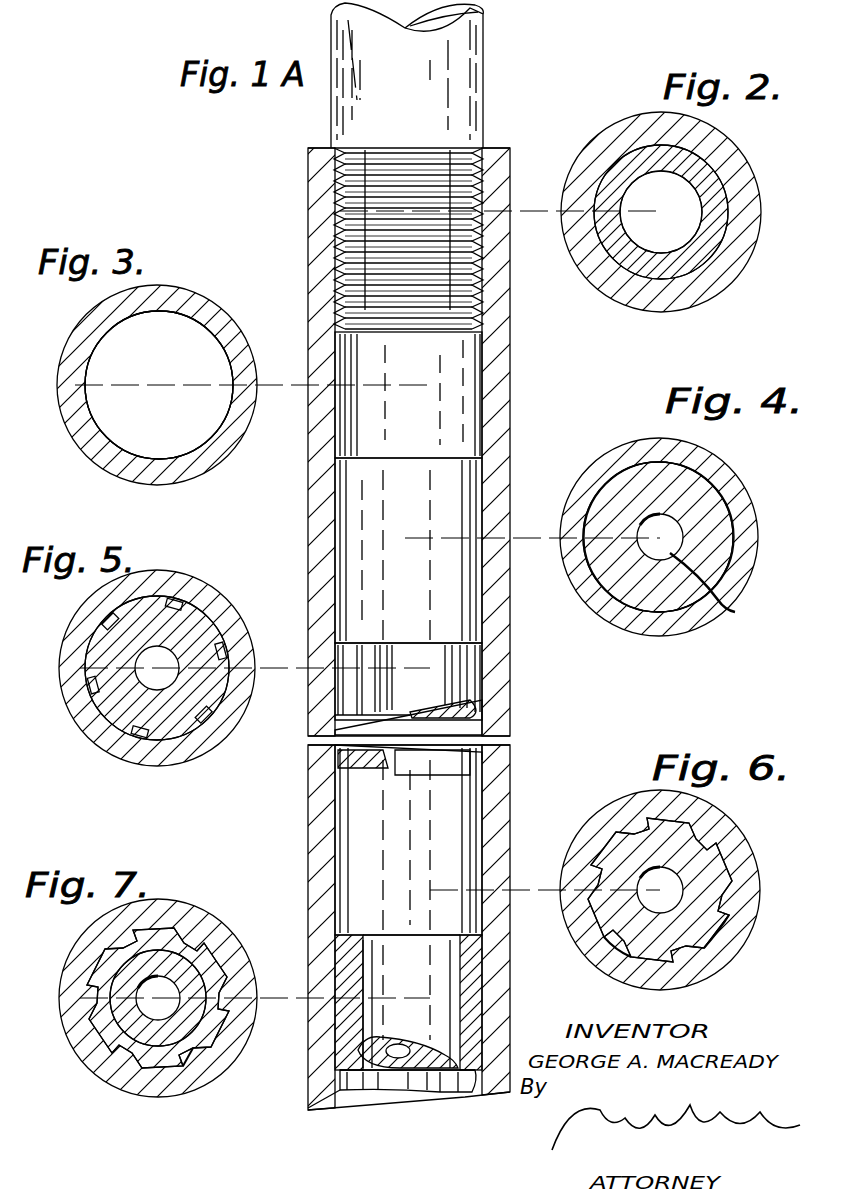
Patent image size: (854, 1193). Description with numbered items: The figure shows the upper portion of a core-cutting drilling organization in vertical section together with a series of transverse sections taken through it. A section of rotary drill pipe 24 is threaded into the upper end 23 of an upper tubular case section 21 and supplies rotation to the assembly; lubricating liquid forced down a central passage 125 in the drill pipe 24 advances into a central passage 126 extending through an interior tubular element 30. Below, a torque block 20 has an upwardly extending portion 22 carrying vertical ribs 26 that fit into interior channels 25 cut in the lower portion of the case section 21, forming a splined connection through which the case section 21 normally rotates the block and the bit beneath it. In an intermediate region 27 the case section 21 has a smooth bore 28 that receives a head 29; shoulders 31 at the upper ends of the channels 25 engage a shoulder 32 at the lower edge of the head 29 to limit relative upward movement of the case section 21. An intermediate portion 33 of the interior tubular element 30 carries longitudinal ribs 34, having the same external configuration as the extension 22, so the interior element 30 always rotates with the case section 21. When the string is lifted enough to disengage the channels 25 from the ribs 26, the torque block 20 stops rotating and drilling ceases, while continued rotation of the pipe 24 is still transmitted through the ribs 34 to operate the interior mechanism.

In FIG. 1A, the torque block 20 is at (469, 1104).
In FIG. 1A, the upper tubular case section 21 is at (308, 215).
In FIG. 2, the upper tubular case section 21 is at (703, 285).
In FIG. 3, the upper tubular case section 21 is at (205, 458).
In FIG. 4, the upper tubular case section 21 is at (730, 485).
In FIG. 5, the upper tubular case section 21 is at (110, 738).
In FIG. 6, the upper tubular case section 21 is at (728, 830).
In FIG. 7, the upper tubular case section 21 is at (185, 925).
In FIG. 1A, the upwardly extending portion of the torque block 22 is at (467, 995).
In FIG. 7, the upwardly extending portion of the torque block 22 is at (213, 1010).
In FIG. 1A, the upper end of case section 23 is at (477, 290).
In FIG. 1A, the rotary drill pipe 24 is at (440, 83).
In FIG. 2, the rotary drill pipe 24 is at (702, 180).
In FIG. 6, the interior channels 25 is at (650, 962).
In FIG. 7, the interior channels 25 is at (182, 1066).
In FIG. 7, the vertical ribs 26 is at (118, 1060).
In FIG. 1A, the intermediate region 27 is at (438, 393).
In FIG. 3, the intermediate region 27 is at (185, 370).
In FIG. 5, the intermediate region 27 is at (210, 622).
In FIG. 3, the smooth bore 28 is at (205, 322).
In FIG. 4, the smooth bore 28 is at (728, 555).
In FIG. 1A, the head 29 is at (370, 597).
In FIG. 4, the head 29 is at (663, 592).
In FIG. 5, the head 29 is at (168, 725).
In FIG. 1A, the interior tubular element 30 is at (395, 965).
In FIG. 1A, the shoulders 31 is at (477, 838).
In FIG. 1A, the shoulder 32 is at (482, 650).
In FIG. 1A, the intermediate portion of interior tubular element 33 is at (395, 788).
In FIG. 6, the intermediate portion of interior tubular element 33 is at (708, 880).
In FIG. 1A, the longitudinal ribs 34 is at (470, 880).
In FIG. 6, the longitudinal ribs 34 is at (715, 932).
In FIG. 1A, the central passage 125 is at (445, 17).
In FIG. 2, the central passage 125 is at (686, 210).
In FIG. 4, the central passage 126 is at (673, 537).
In FIG. 6, the central passage 126 is at (672, 900).
In FIG. 7, the central passage 126 is at (170, 995).